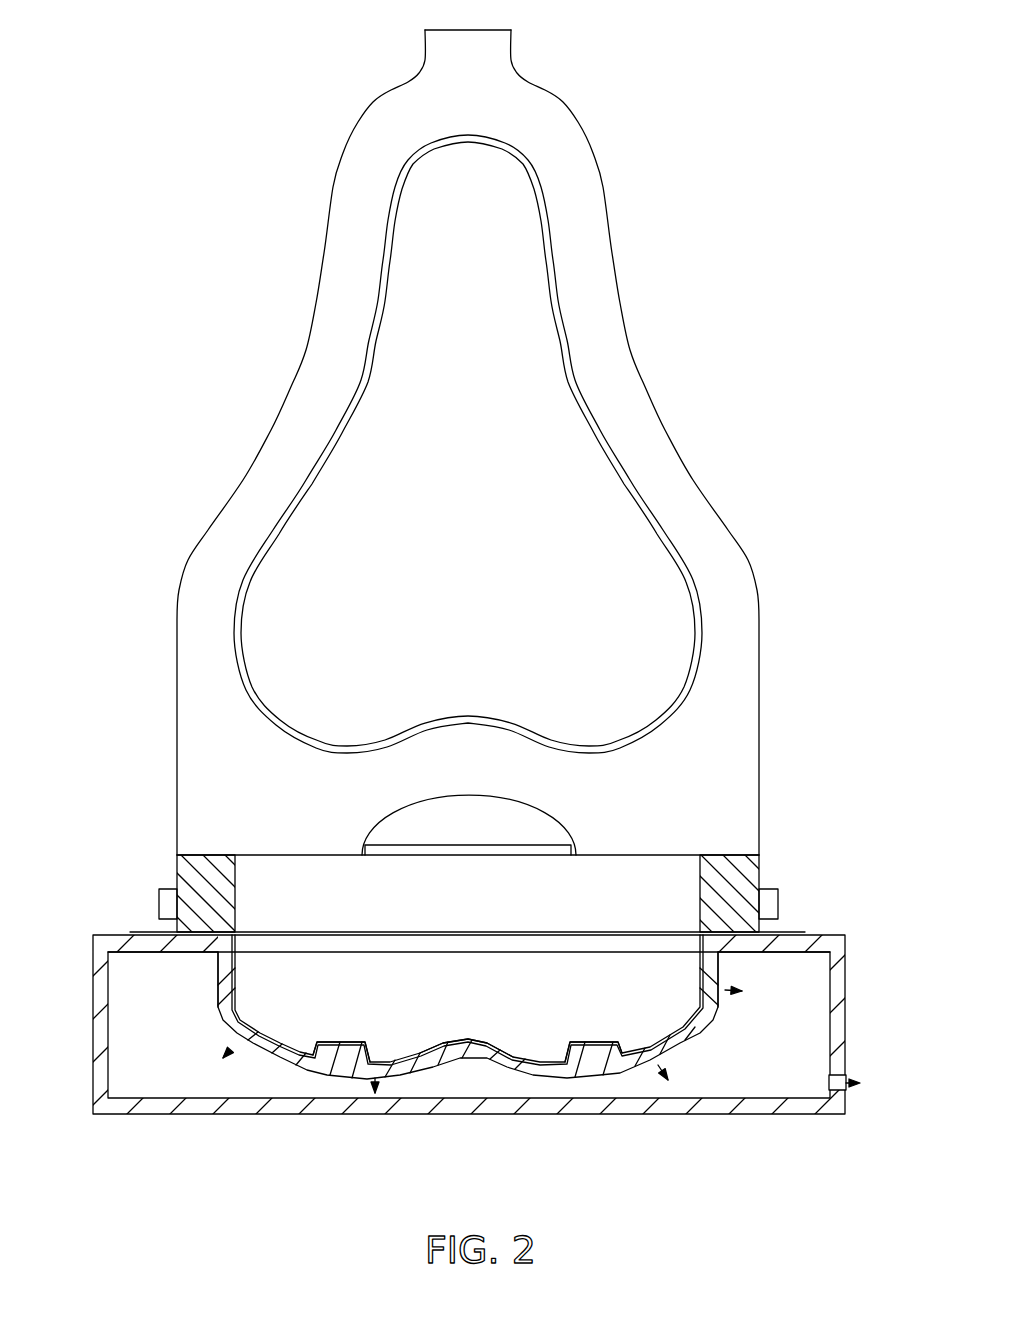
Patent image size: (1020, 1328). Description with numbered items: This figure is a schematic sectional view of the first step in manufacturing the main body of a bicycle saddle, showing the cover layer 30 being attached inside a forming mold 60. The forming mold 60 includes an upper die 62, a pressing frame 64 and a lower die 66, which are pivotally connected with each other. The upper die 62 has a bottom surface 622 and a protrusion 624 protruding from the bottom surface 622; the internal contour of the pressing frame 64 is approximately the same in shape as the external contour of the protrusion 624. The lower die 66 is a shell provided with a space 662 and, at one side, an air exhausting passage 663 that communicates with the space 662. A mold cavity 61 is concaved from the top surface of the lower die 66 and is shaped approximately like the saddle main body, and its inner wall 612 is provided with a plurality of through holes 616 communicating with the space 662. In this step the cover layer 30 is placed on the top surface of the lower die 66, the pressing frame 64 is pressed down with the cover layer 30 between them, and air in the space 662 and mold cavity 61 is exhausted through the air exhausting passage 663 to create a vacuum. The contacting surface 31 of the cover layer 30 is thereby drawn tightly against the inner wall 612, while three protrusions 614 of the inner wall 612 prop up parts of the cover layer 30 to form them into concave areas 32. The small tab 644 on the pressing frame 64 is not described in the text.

The forming mold 60 is at (455, 485).
The upper die 62 is at (168, 703).
The bottom surface 622 is at (338, 352).
The protrusion 624 is at (447, 312).
The pressing frame 64 is at (190, 870).
The engaging rib 644 is at (108, 932).
The cover layer 30 is at (502, 959).
The lower die 66 is at (502, 1061).
The space 662 is at (177, 1050).
The air exhausting passage 663 is at (838, 1075).
The mold cavity 61 is at (463, 952).
The inner wall 612 is at (499, 1040).
The protrusions 614 is at (353, 1059).
The through holes 616 is at (283, 1052).
The contacting surface 31 is at (440, 1059).
The concave areas 32 is at (337, 1050).